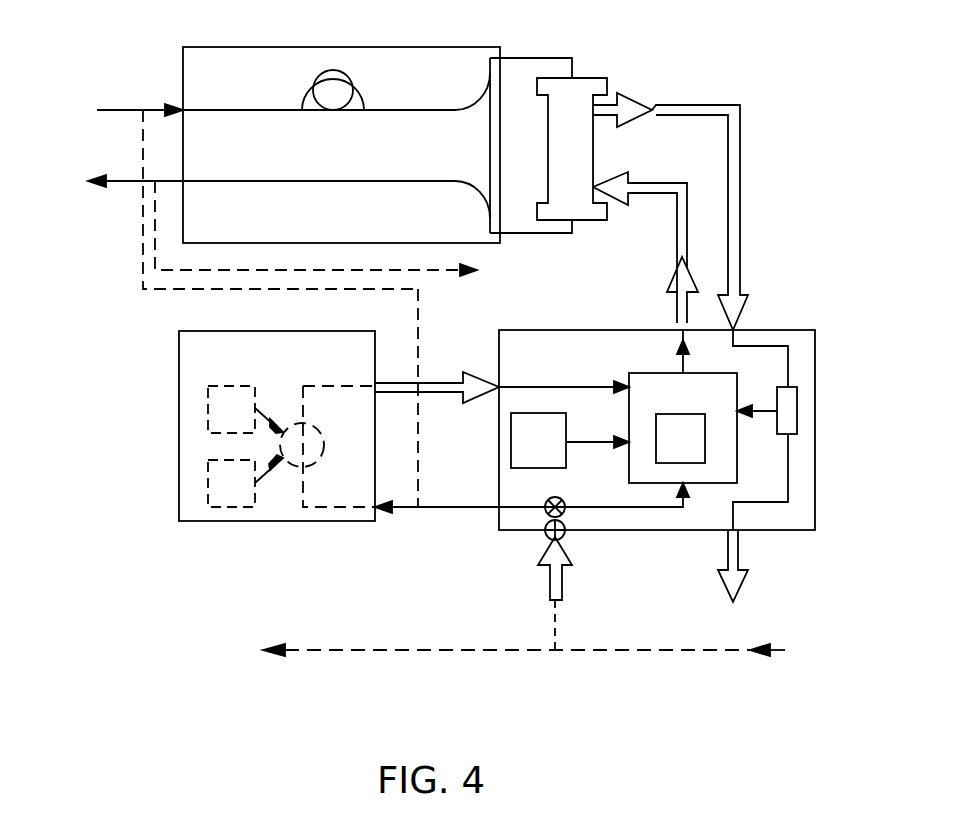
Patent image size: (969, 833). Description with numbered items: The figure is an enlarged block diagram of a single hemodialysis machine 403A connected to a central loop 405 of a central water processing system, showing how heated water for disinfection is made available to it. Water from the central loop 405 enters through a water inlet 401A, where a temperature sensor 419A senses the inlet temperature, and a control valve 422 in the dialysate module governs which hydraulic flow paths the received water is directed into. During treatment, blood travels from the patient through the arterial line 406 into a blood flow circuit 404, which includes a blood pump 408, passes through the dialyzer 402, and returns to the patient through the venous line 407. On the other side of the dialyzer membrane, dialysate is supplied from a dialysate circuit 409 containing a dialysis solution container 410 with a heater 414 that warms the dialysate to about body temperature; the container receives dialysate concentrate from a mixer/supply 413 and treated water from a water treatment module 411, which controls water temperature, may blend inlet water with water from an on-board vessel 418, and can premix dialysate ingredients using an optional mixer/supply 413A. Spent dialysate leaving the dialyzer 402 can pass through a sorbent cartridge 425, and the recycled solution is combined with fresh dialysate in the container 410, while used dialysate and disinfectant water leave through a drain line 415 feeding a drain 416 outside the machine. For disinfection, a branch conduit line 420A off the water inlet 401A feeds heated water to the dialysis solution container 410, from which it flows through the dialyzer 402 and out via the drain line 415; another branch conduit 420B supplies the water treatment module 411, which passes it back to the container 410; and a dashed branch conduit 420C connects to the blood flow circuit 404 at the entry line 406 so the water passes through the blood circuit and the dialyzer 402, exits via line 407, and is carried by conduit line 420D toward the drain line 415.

The water inlet 401A is at (545, 583).
The dialyzer 402 is at (588, 78).
The hemodialysis machine 403A is at (786, 128).
The blood flow circuit 404 is at (247, 87).
The central loop 405 is at (637, 654).
The arterial line 406 is at (127, 108).
The venous line 407 is at (120, 183).
The blood pump 408 is at (333, 97).
The dialysate circuit 409 is at (559, 366).
The dialysis solution container 410 is at (732, 406).
The water treatment module 411 is at (236, 362).
The mixer/supply 413 is at (555, 449).
The mixer/supply 413A is at (230, 497).
The heater 414 is at (699, 452).
The drain line 415 is at (788, 482).
The drain 416 is at (728, 600).
The vessel 418 is at (238, 397).
The temperature sensor 419A is at (565, 535).
The branch conduit line 420A is at (603, 505).
The branch conduit 420B is at (410, 510).
The branch conduit 420C is at (418, 443).
The conduit line 420D is at (190, 272).
The control valve 422 is at (546, 503).
The sorbent cartridge 425 is at (792, 393).